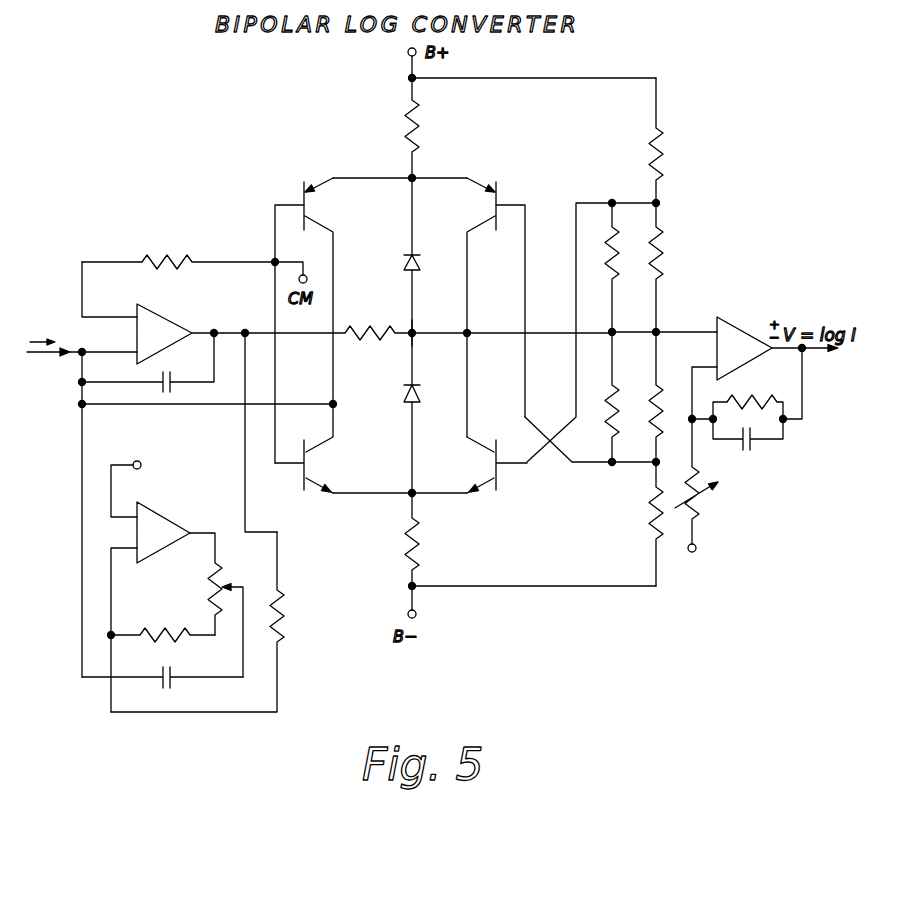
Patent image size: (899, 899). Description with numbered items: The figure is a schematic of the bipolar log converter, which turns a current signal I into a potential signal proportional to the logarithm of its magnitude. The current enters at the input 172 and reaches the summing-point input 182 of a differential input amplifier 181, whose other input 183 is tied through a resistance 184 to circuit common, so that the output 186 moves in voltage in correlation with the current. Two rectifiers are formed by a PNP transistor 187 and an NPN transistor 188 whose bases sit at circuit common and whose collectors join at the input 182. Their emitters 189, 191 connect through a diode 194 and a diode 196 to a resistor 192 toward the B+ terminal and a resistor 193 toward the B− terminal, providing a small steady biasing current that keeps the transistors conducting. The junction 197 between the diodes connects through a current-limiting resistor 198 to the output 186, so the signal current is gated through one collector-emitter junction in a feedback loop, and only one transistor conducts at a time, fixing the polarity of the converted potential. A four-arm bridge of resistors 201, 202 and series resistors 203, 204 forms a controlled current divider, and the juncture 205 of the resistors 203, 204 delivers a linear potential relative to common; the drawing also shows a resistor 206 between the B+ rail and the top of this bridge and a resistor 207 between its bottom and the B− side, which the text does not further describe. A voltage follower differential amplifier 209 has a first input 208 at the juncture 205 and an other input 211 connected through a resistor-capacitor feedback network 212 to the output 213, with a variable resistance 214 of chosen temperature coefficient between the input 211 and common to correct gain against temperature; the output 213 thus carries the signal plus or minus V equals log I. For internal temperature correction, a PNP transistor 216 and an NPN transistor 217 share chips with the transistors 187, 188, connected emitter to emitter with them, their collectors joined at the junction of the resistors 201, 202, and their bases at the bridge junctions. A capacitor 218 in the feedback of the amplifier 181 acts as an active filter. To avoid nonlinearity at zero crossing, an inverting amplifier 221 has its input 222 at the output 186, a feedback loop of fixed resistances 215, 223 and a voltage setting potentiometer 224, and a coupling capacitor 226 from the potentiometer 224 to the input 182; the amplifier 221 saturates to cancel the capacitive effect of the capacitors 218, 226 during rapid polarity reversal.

The input 172 is at (45, 358).
The differential input amplifier 181 is at (169, 321).
The input 182 is at (114, 345).
The other input 183 is at (115, 314).
The resistance 184 is at (172, 260).
The output 186 is at (231, 328).
The PNP transistor 187 is at (295, 265).
The NPN transistor 188 is at (317, 460).
The emitter 189 is at (314, 180).
The emitter 191 is at (312, 482).
The resistor 192 is at (418, 113).
The resistor 193 is at (420, 545).
The diode 194 is at (430, 262).
The diode 196 is at (419, 408).
The junction 197 is at (420, 330).
The current-limiting resistor 198 is at (369, 330).
The resistor 201 is at (620, 259).
The resistor 202 is at (618, 396).
The resistor 203 is at (665, 247).
The resistor 204 is at (643, 423).
The juncture 205 is at (658, 330).
The resistor 206 is at (665, 140).
The resistor 207 is at (650, 525).
The first input 208 is at (692, 327).
The voltage follower differential amplifier 209 is at (740, 323).
The other input 211 is at (705, 364).
The resistor-capacitor feedback network 212 is at (784, 442).
The output 213 is at (810, 352).
The variable resistance 214 is at (698, 512).
The fixed resistance 215 is at (285, 617).
The PNP transistor 216 is at (498, 189).
The NPN transistor 217 is at (502, 474).
The capacitor 218 is at (172, 379).
The inverting amplifier 221 is at (167, 518).
The input 222 is at (121, 551).
The fixed resistance 223 is at (170, 627).
The voltage setting potentiometer 224 is at (220, 580).
The coupling capacitor 226 is at (170, 690).